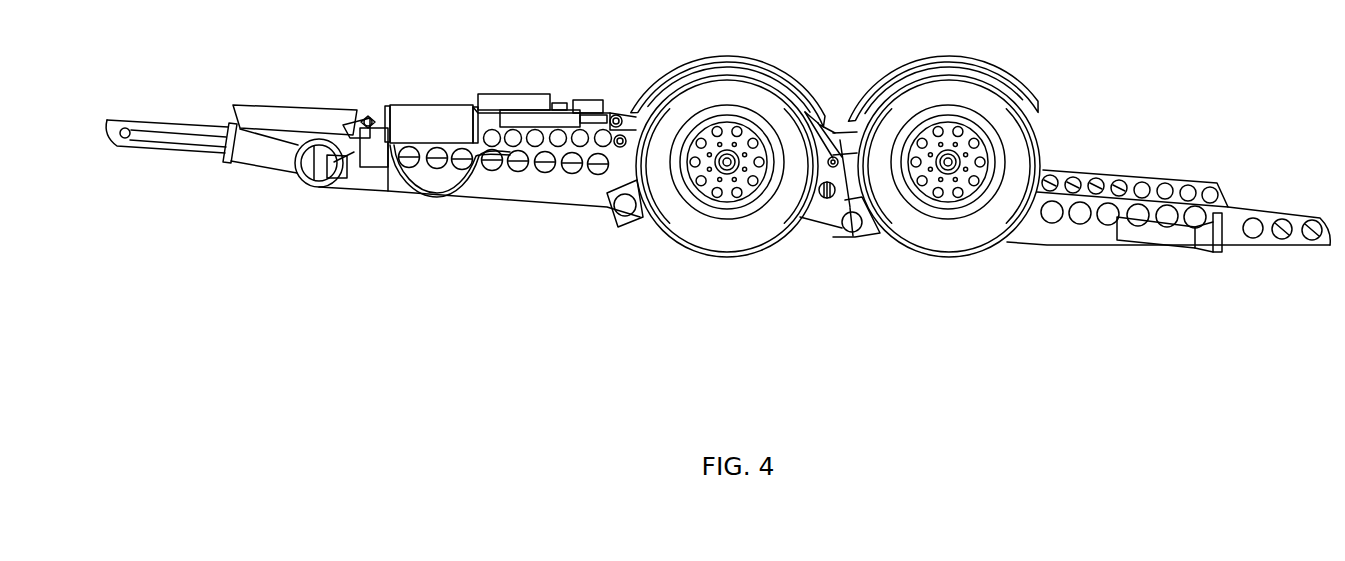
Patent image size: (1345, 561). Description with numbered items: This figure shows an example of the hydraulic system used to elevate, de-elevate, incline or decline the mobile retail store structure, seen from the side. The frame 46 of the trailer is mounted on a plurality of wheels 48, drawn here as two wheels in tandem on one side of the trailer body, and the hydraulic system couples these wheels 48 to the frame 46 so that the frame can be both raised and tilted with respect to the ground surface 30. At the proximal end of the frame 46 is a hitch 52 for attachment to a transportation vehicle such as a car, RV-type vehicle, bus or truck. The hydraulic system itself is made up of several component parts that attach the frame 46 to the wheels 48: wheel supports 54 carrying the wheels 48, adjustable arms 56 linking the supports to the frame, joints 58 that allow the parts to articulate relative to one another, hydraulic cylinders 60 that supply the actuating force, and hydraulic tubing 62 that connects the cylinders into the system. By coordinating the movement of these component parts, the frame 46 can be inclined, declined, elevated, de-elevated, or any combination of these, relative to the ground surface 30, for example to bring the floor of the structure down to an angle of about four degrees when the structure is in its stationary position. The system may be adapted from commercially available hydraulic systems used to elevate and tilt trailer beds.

The ground surface 30 is at (718, 197).
The frame 46 is at (1093, 222).
The wheels 48 is at (702, 230).
The hitch 52 is at (1000, 67).
The wheel supports 54 is at (667, 75).
The adjustable arms 56 is at (833, 117).
The joints 58 is at (852, 233).
The hydraulic cylinders 60 is at (435, 123).
The hydraulic tubing 62 is at (423, 195).